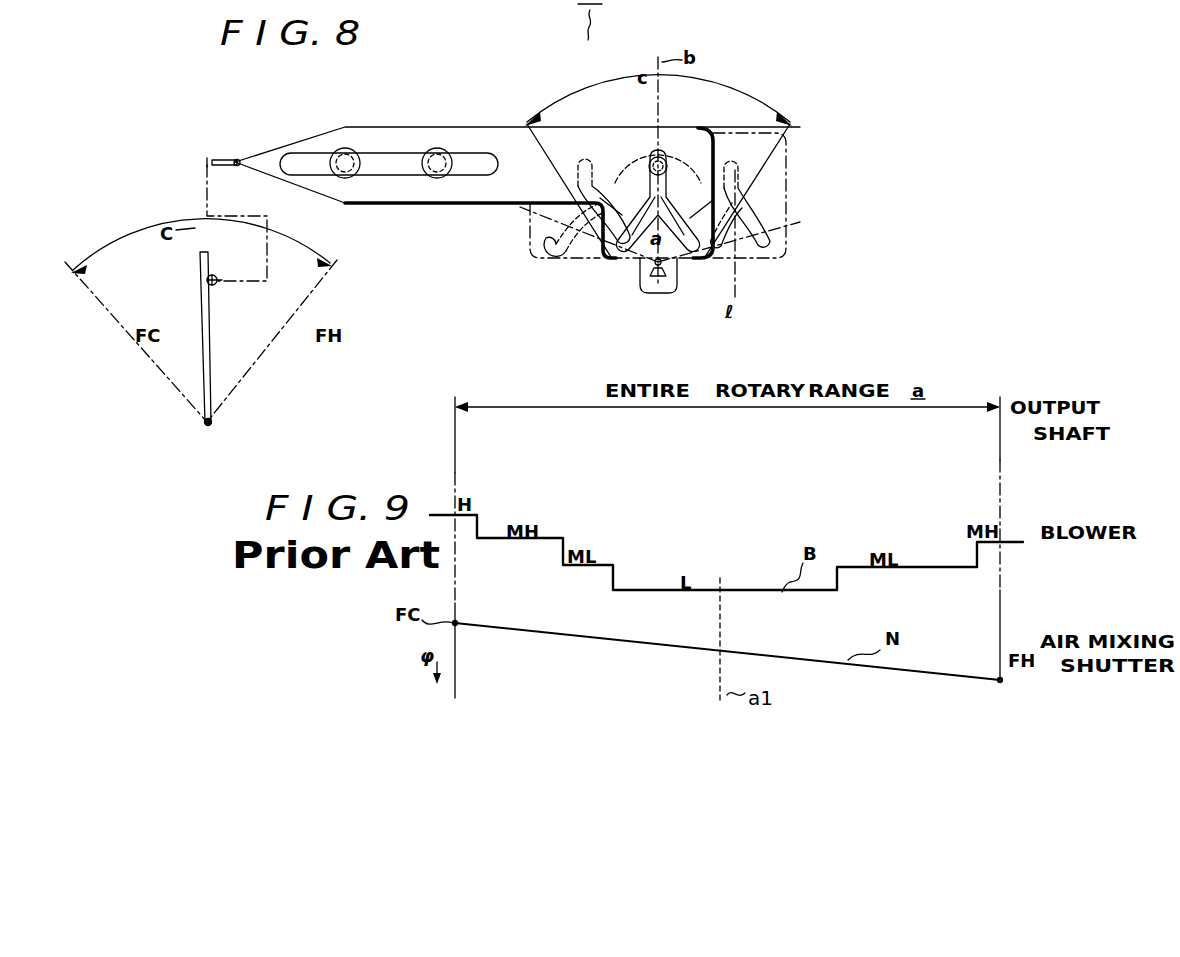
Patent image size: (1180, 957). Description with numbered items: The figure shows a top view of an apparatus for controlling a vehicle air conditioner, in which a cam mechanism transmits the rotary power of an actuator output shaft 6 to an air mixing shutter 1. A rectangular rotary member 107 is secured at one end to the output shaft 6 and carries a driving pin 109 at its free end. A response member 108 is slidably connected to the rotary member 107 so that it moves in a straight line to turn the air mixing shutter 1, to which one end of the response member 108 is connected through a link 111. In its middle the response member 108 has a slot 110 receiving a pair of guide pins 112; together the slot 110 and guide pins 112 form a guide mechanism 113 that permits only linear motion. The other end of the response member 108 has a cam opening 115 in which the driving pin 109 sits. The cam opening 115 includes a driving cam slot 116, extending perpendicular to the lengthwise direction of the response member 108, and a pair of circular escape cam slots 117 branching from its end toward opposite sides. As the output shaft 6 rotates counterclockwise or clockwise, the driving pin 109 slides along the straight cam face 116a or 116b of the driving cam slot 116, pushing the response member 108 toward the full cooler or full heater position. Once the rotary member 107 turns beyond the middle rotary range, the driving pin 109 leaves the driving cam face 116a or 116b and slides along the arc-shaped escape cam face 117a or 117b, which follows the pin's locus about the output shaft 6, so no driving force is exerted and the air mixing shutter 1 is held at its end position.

The air mixing shutter 1 is at (212, 313).
The output shaft 6 is at (658, 278).
The rotary member 107 is at (668, 262).
The response member 108 is at (456, 205).
The driving pin 109 is at (662, 156).
The slot 110 is at (396, 165).
The link 111 is at (224, 157).
The guide pins 112 is at (430, 172).
The guide mechanism 113 is at (380, 150).
The cam opening 115 is at (545, 125).
The driving cam slot 116 is at (650, 158).
The straight cam face 116a is at (642, 190).
The straight cam face 116b is at (674, 195).
The escape cam slots 117 is at (630, 190).
The escape cam face 117a is at (633, 216).
The escape cam face 117b is at (685, 197).